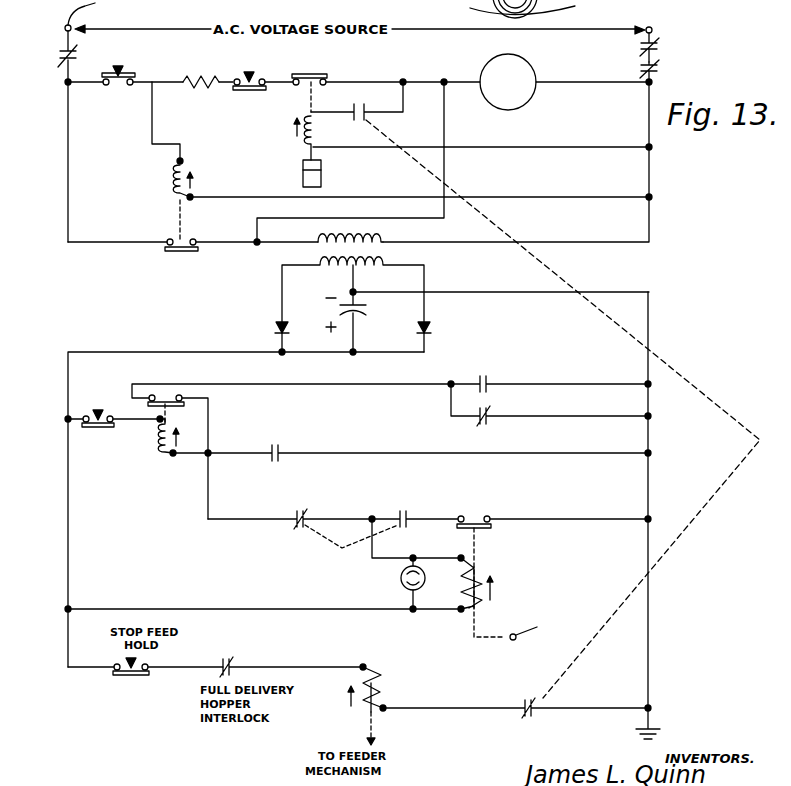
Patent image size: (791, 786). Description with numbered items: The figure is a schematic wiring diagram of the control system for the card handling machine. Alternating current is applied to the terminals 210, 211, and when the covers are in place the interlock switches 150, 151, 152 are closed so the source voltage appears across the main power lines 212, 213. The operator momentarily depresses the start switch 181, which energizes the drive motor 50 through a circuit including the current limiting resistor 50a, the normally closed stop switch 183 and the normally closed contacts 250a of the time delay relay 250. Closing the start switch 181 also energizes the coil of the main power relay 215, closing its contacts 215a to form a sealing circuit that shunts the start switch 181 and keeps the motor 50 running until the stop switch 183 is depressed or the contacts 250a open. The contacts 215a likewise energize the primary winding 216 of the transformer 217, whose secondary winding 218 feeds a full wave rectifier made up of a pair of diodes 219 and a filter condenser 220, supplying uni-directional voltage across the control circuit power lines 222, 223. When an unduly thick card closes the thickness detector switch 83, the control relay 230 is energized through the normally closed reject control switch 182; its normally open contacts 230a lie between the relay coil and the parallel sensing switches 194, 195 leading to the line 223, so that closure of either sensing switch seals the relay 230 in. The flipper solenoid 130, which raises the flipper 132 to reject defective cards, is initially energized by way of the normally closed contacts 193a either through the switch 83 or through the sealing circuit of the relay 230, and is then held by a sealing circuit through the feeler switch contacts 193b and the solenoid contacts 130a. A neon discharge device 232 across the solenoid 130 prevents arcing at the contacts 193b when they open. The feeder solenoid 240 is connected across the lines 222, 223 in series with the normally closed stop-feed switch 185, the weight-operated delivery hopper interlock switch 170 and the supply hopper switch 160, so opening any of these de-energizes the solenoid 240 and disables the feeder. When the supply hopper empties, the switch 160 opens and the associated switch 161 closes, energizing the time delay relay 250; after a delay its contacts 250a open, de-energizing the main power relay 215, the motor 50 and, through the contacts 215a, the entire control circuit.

The terminal 210 is at (96, 15).
The interlock switch 152 is at (60, 53).
The start switch 181 is at (118, 64).
The current limiting resistor 50a is at (190, 69).
The stop switch 183 is at (262, 64).
The contacts of time delay relay 250a is at (322, 72).
The switch 161 is at (378, 96).
The time delay relay 250 is at (300, 145).
The drive motor 50 is at (530, 66).
The terminal 211 is at (652, 29).
The interlock switch 150 is at (660, 46).
The interlock switch 151 is at (660, 68).
The main power line 212 is at (68, 160).
The main power line 213 is at (650, 160).
The main power relay 215 is at (172, 192).
The contacts of main power relay 215a is at (164, 234).
The primary winding 216 is at (381, 236).
The transformer 217 is at (384, 262).
The secondary winding 218 is at (372, 278).
The diodes 219 is at (275, 326).
The filter condenser 220 is at (366, 310).
The control circuit power line 222 is at (68, 520).
The control circuit power line 223 is at (648, 432).
The reject control switch 182 is at (100, 404).
The control relay 230 is at (162, 438).
The contacts of control relay 230a is at (170, 392).
The thickness detector switch 83 is at (275, 440).
The sensing switch 195 is at (484, 370).
The sensing switch 194 is at (488, 404).
The switch contacts 193a is at (302, 508).
The feeler switch contacts 193b is at (404, 508).
The solenoid contacts 130a is at (484, 508).
The flipper solenoid 130 is at (476, 566).
The neon discharge device 232 is at (400, 580).
The flipper 132 is at (540, 633).
The stop-feed switch 185 is at (122, 678).
The delivery hopper interlock switch 170 is at (229, 656).
The feeder solenoid 240 is at (380, 687).
The supply hopper switch 160 is at (528, 698).